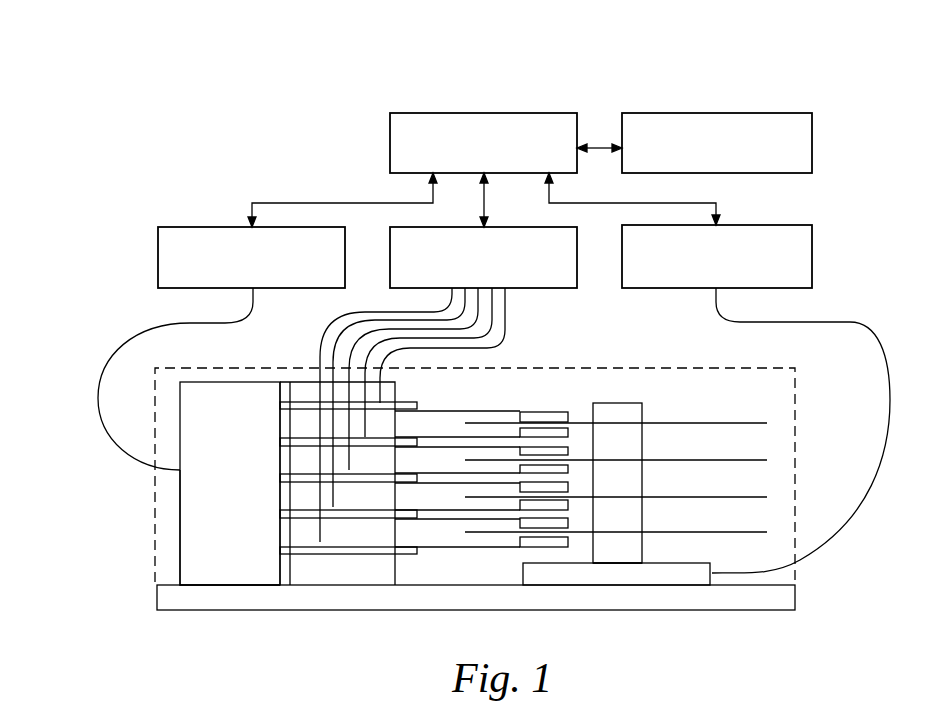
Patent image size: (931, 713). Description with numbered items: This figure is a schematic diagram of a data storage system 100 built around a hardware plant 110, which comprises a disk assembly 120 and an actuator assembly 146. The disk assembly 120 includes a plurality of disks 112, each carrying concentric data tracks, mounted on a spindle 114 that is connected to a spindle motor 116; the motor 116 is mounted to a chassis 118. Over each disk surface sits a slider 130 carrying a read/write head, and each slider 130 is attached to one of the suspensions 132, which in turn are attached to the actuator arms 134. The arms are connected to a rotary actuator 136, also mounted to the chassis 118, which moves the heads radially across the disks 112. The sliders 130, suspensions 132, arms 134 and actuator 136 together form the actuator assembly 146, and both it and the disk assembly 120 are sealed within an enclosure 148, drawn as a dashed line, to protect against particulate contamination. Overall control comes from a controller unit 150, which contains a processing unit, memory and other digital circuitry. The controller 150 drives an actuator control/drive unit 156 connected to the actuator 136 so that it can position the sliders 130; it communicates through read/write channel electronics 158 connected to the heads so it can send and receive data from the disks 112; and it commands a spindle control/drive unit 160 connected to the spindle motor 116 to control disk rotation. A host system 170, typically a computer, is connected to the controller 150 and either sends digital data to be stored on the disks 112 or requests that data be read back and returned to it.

The data storage system 100 is at (306, 68).
The hardware plant 110 is at (112, 481).
The disks 112 is at (752, 531).
The spindle 114 is at (642, 412).
The spindle motor 116 is at (647, 579).
The chassis 118 is at (788, 597).
The disk assembly 120 is at (588, 580).
The sliders 130 is at (550, 430).
The suspensions 132 is at (490, 473).
The actuator arms 134 is at (372, 548).
The rotary actuator 136 is at (258, 475).
The actuator assembly 146 is at (197, 553).
The enclosure 148 is at (152, 432).
The controller unit 150 is at (390, 137).
The actuator control/drive unit 156 is at (158, 245).
The read/write channel electronics 158 is at (390, 250).
The spindle control/drive unit 160 is at (813, 247).
The host system 170 is at (813, 140).